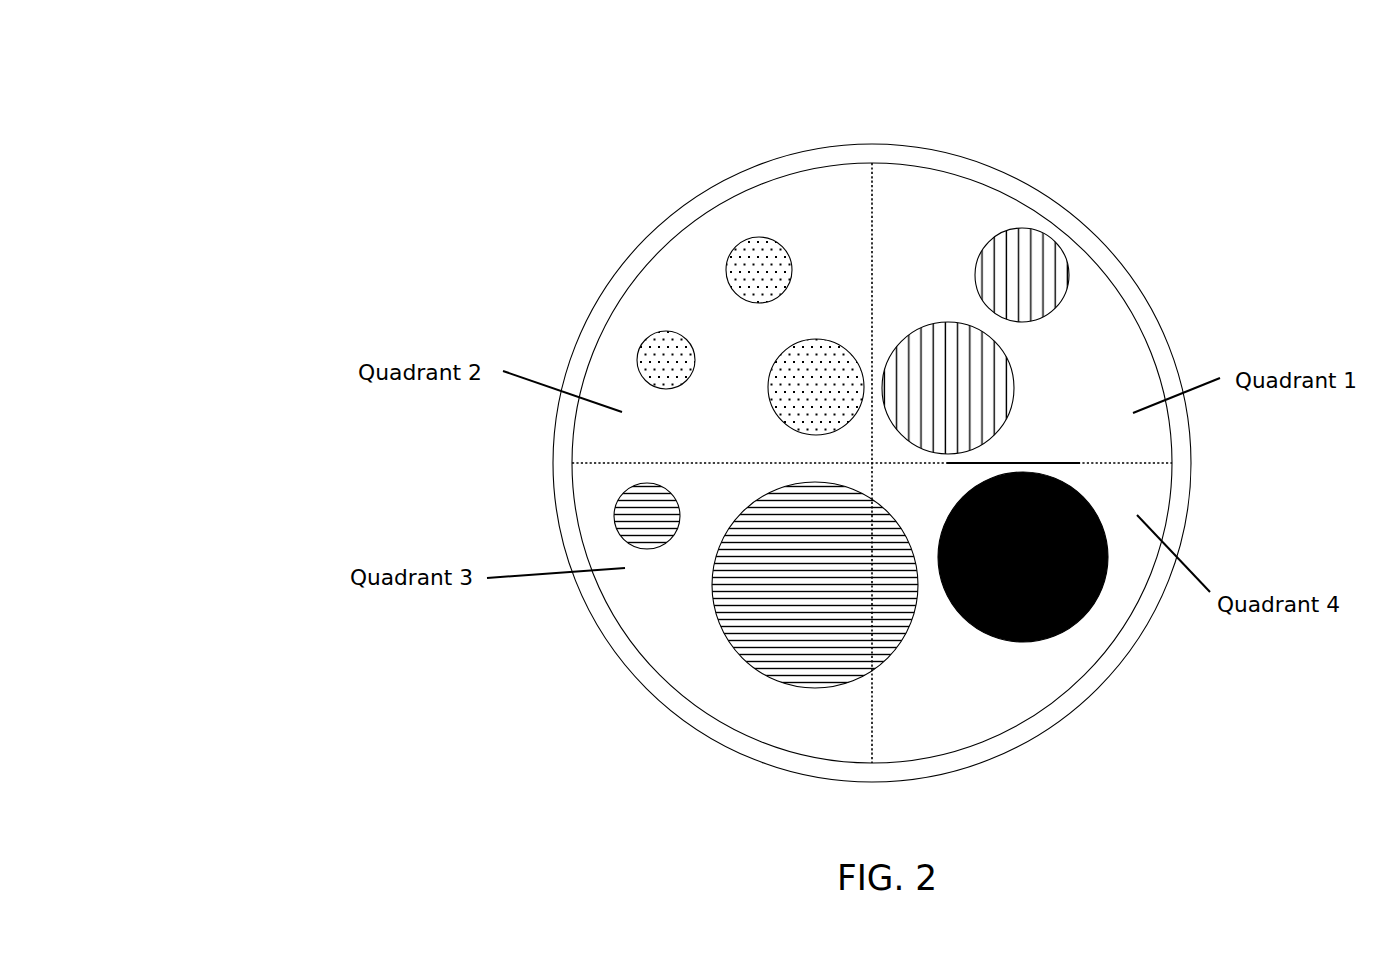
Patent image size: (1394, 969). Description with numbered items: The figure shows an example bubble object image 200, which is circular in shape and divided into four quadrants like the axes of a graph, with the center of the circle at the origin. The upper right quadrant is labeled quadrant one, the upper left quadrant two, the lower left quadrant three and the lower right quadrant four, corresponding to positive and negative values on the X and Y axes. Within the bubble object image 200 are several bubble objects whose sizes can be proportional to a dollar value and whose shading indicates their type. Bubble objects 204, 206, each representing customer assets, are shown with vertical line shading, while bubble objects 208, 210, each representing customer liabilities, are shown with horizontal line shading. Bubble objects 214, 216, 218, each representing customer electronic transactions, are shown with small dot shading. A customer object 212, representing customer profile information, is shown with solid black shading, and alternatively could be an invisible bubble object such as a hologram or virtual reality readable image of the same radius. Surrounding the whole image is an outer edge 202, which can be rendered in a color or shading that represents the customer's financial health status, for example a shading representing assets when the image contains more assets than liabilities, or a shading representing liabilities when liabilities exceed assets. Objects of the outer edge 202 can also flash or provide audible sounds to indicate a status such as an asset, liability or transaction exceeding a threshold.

The bubble object image 200 is at (208, 52).
The outer edge 202 is at (694, 210).
The bubble object 204 is at (1018, 385).
The bubble object 206 is at (972, 253).
The bubble object 208 is at (712, 585).
The bubble object 210 is at (620, 487).
The customer object 212 is at (976, 642).
The bubble object 214 is at (833, 342).
The bubble object 216 is at (667, 331).
The bubble object 218 is at (791, 247).